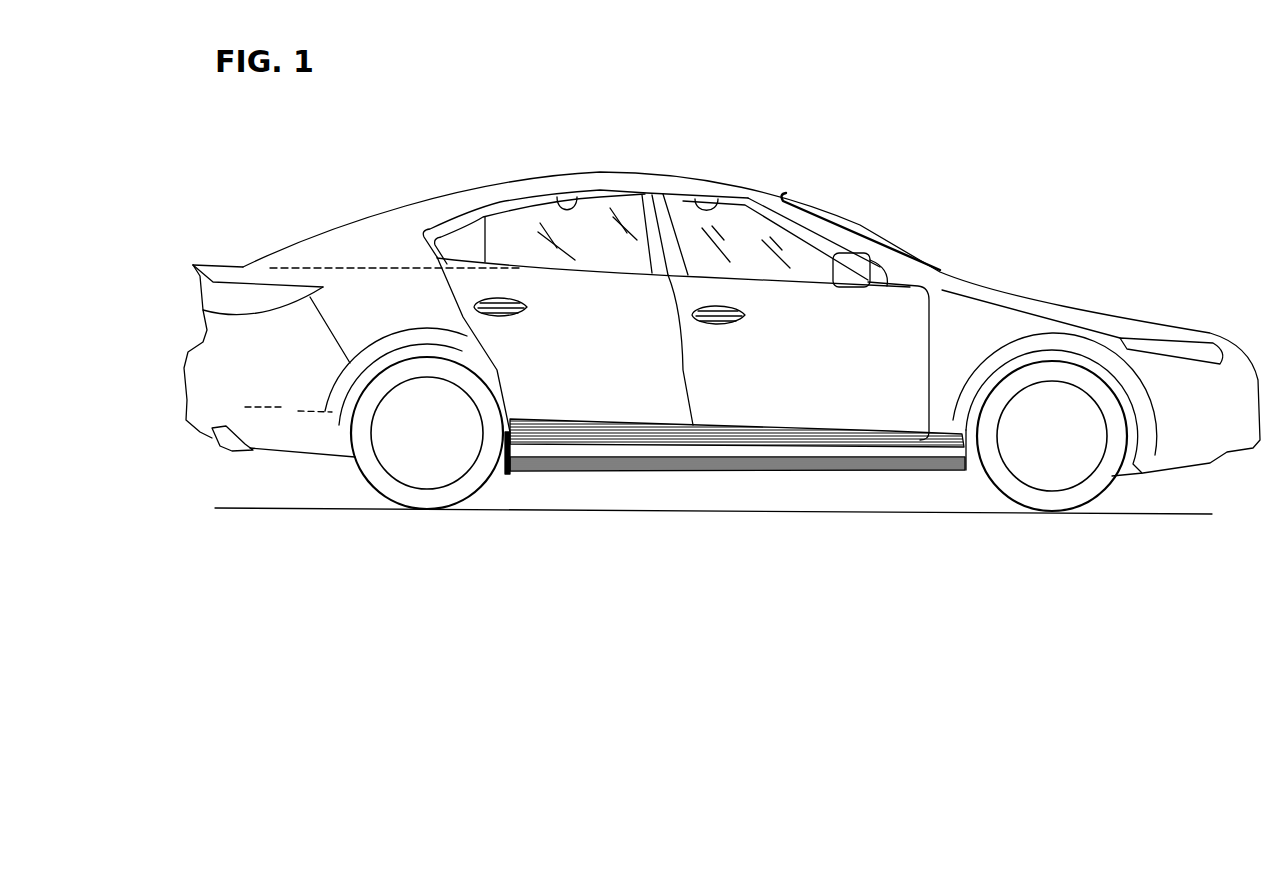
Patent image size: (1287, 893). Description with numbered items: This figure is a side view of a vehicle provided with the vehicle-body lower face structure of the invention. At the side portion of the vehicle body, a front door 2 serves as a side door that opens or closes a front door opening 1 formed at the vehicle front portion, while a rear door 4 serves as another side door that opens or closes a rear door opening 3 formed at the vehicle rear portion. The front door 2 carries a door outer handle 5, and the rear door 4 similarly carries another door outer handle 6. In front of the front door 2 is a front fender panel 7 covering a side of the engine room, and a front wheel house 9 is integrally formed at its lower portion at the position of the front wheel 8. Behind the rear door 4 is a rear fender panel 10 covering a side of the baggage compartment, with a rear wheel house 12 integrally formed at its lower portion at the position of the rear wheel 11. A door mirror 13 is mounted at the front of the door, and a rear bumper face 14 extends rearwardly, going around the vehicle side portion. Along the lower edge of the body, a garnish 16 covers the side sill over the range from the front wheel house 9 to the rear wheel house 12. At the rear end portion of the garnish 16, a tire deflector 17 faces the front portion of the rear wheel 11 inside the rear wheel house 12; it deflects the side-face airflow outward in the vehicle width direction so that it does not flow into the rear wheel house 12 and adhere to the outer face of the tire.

The front door opening 1 is at (716, 199).
The front door 2 is at (798, 353).
The rear door opening 3 is at (558, 198).
The rear door 4 is at (590, 353).
The door outer handle 5 is at (703, 326).
The door outer handle 6 is at (497, 317).
The front fender panel 7 is at (978, 312).
The front wheel 8 is at (1104, 494).
The front wheel house 9 is at (1117, 383).
The rear fender panel 10 is at (393, 302).
The rear wheel 11 is at (360, 482).
The rear wheel house 12 is at (345, 393).
The door mirror 13 is at (856, 284).
The rear bumper face 14 is at (217, 345).
The garnish 16 is at (780, 454).
The tire deflector 17 is at (514, 478).